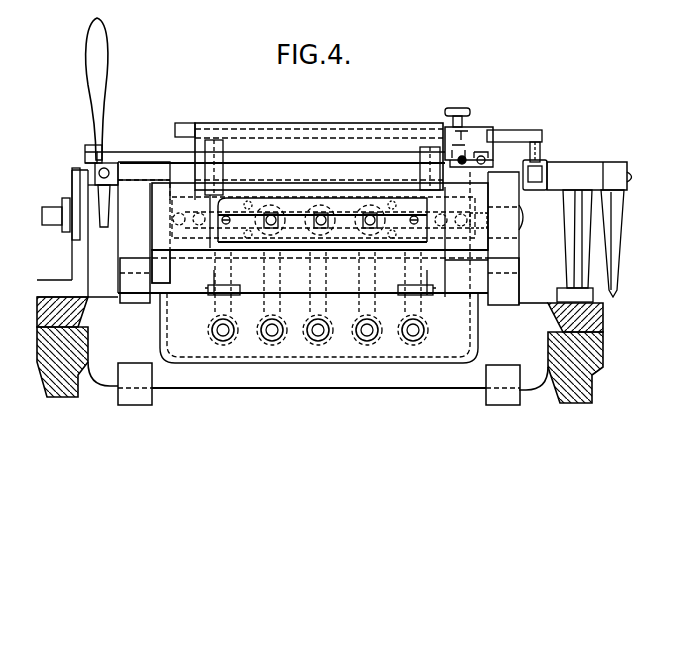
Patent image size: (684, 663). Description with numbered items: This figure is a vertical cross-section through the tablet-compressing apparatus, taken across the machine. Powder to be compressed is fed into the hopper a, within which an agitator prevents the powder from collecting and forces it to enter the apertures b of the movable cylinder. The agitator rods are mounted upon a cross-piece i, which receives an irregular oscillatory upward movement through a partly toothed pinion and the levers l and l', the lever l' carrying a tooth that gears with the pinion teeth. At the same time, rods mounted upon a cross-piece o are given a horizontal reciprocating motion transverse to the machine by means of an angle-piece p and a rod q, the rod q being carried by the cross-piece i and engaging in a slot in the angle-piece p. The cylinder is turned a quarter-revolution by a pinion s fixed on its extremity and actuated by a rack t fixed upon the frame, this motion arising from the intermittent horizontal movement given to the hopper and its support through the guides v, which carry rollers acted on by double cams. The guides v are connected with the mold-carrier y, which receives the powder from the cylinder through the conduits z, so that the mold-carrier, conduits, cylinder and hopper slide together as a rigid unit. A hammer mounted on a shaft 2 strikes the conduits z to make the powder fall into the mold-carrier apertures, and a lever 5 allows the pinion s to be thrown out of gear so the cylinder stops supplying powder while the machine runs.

The lever 5 is at (92, 79).
The shaft 2 is at (140, 155).
The hopper a is at (332, 123).
The apertures b is at (272, 212).
The cross-piece o is at (465, 128).
The angle-piece p is at (474, 157).
The rod q is at (485, 157).
The cross-piece i is at (520, 135).
The lever l is at (586, 147).
The lever l' is at (602, 246).
The pinion s is at (75, 242).
The rack t is at (77, 272).
The guides v is at (136, 300).
The mold-carrier y is at (343, 335).
The conduits z is at (213, 274).